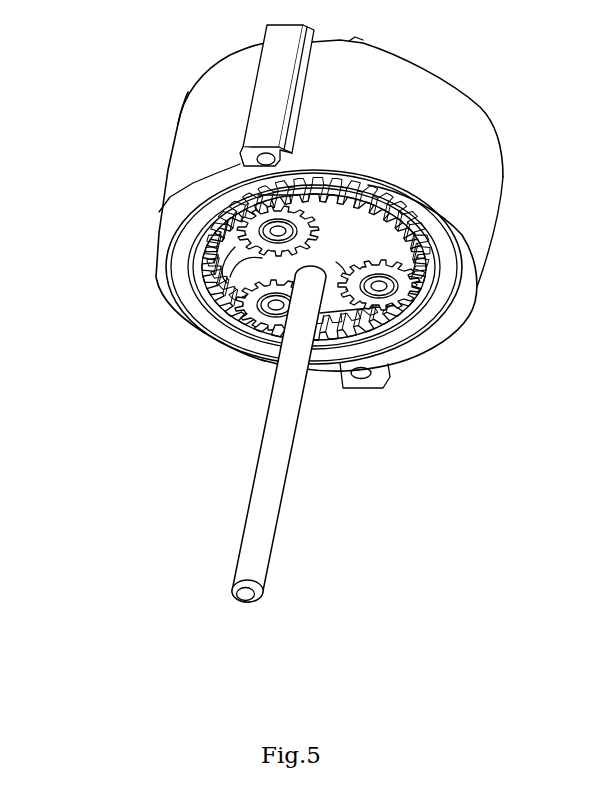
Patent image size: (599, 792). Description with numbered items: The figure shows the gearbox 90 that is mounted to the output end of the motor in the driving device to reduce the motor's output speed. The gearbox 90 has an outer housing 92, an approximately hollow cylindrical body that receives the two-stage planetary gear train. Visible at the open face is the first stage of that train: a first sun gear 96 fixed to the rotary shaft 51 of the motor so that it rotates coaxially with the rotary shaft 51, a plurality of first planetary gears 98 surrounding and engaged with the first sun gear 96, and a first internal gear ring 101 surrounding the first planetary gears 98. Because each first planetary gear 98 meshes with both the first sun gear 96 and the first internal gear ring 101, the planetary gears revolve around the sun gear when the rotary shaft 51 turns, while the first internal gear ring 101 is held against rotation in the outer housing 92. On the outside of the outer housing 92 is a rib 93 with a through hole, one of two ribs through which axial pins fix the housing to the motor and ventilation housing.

The gearbox 90 is at (152, 140).
The outer housing 92 is at (437, 123).
The rib 93 is at (268, 62).
The first sun gear 96 is at (340, 252).
The first planetary gear 98 is at (253, 243).
The first internal gear ring 101 is at (203, 283).
The rotary shaft 51 is at (265, 493).